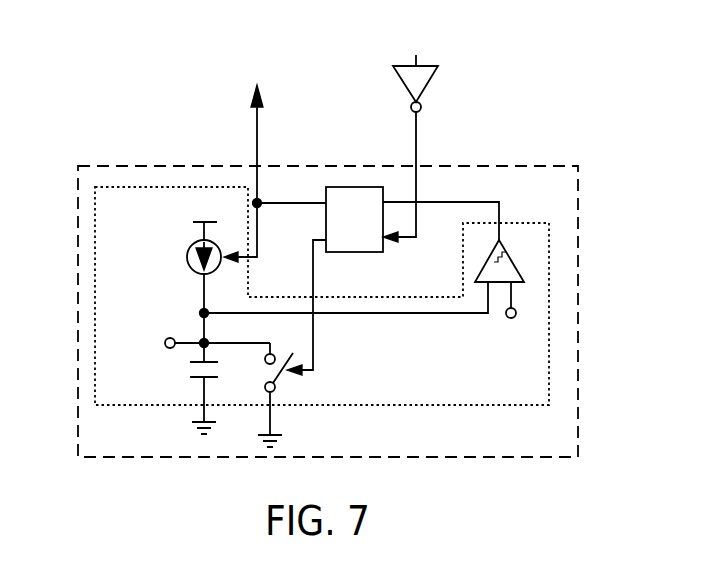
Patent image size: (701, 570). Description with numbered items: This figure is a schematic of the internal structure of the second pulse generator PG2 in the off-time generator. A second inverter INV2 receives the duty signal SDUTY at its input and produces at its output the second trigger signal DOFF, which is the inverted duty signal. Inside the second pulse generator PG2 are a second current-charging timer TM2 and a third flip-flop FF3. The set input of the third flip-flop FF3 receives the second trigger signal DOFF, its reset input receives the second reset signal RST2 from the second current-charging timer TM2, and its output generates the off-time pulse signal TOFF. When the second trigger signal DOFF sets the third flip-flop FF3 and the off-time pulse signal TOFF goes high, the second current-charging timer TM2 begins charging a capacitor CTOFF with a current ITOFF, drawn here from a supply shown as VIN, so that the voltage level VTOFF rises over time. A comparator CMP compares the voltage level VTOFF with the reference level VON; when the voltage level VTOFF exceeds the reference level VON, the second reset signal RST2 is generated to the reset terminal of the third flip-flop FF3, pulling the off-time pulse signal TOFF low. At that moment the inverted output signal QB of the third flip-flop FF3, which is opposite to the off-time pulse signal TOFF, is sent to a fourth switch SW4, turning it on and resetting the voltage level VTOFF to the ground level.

The second pulse generator PG2 is at (78, 354).
The second current-charging timer TM2 is at (415, 405).
The third flip-flop FF3 is at (343, 252).
The second inverter INV2 is at (436, 78).
The fourth switch SW4 is at (279, 378).
The second reset signal RST2 is at (457, 193).
The inverted output signal QB is at (317, 307).
The off-time pulse signal TOFF is at (317, 213).
The second trigger signal DOFF is at (407, 160).
The duty signal SDUTY is at (412, 42).
The reference level VON is at (512, 338).
The input voltage VIN is at (201, 218).
The current ITOFF is at (177, 291).
The voltage level VTOFF is at (188, 345).
The capacitor CTOFF is at (173, 388).
The comparator CMP is at (364, 279).